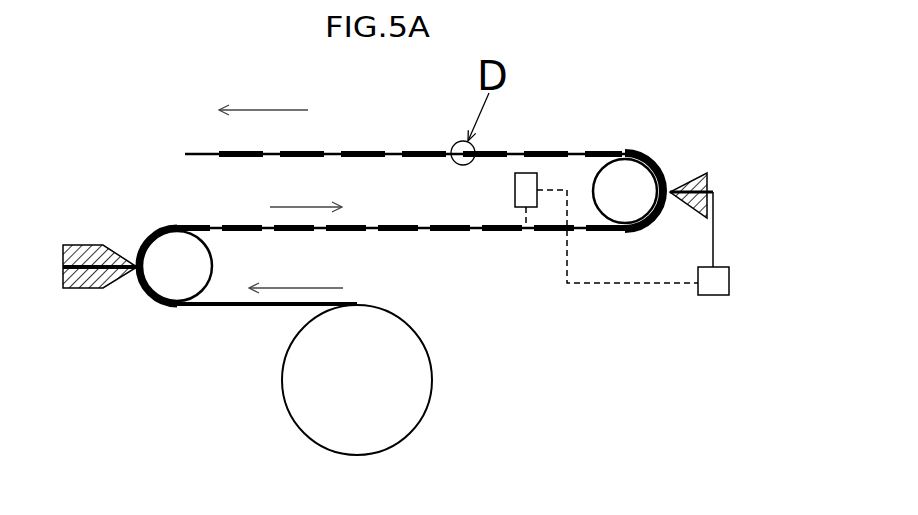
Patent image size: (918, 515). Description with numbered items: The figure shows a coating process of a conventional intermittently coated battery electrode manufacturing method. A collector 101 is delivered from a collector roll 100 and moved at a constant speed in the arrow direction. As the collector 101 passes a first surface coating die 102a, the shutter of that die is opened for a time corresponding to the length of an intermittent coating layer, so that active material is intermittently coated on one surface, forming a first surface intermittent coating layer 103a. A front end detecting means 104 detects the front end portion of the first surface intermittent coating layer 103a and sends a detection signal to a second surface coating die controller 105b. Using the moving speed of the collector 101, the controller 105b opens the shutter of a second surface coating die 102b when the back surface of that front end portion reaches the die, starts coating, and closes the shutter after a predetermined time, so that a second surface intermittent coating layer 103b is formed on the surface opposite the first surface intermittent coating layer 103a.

The collector roll 100 is at (403, 362).
The collector 101 is at (217, 308).
The first surface coating die 102a is at (80, 247).
The second surface coating die 102b is at (690, 173).
The first surface intermittent coating layer 103a is at (445, 224).
The second surface intermittent coating layer 103b is at (351, 150).
The front end detecting means 104 is at (524, 173).
The second surface coating die controller 105b is at (710, 287).